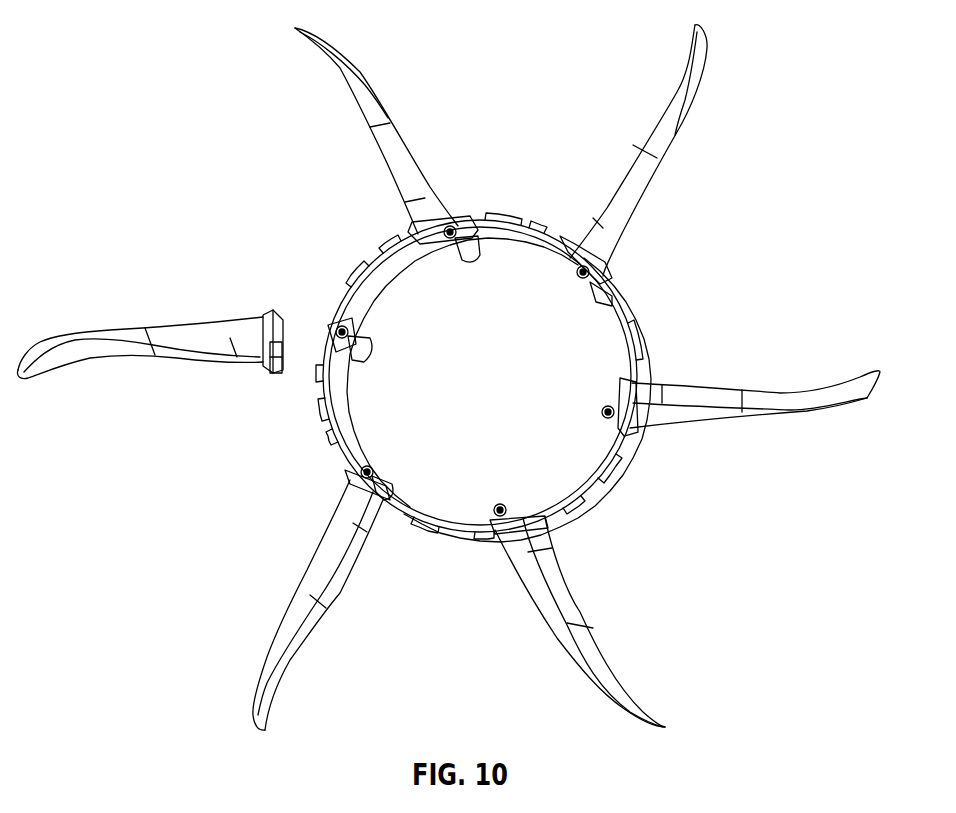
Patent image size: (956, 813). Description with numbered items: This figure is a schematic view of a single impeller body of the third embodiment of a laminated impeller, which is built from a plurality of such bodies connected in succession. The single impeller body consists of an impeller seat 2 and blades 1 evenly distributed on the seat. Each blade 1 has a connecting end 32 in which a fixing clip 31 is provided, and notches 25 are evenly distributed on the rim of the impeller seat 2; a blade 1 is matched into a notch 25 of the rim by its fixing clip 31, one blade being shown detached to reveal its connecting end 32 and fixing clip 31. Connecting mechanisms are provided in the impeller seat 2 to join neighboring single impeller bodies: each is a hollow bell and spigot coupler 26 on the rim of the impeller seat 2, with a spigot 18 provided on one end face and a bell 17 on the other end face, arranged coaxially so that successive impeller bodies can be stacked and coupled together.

The blade 1 is at (120, 333).
The impeller seat 2 is at (605, 480).
The bell 17 is at (607, 300).
The spigot 18 is at (610, 263).
The notch 25 is at (382, 263).
The hollow bell and spigot coupler 26 is at (463, 250).
The fixing clip 31 is at (276, 373).
The connecting end 32 is at (265, 318).